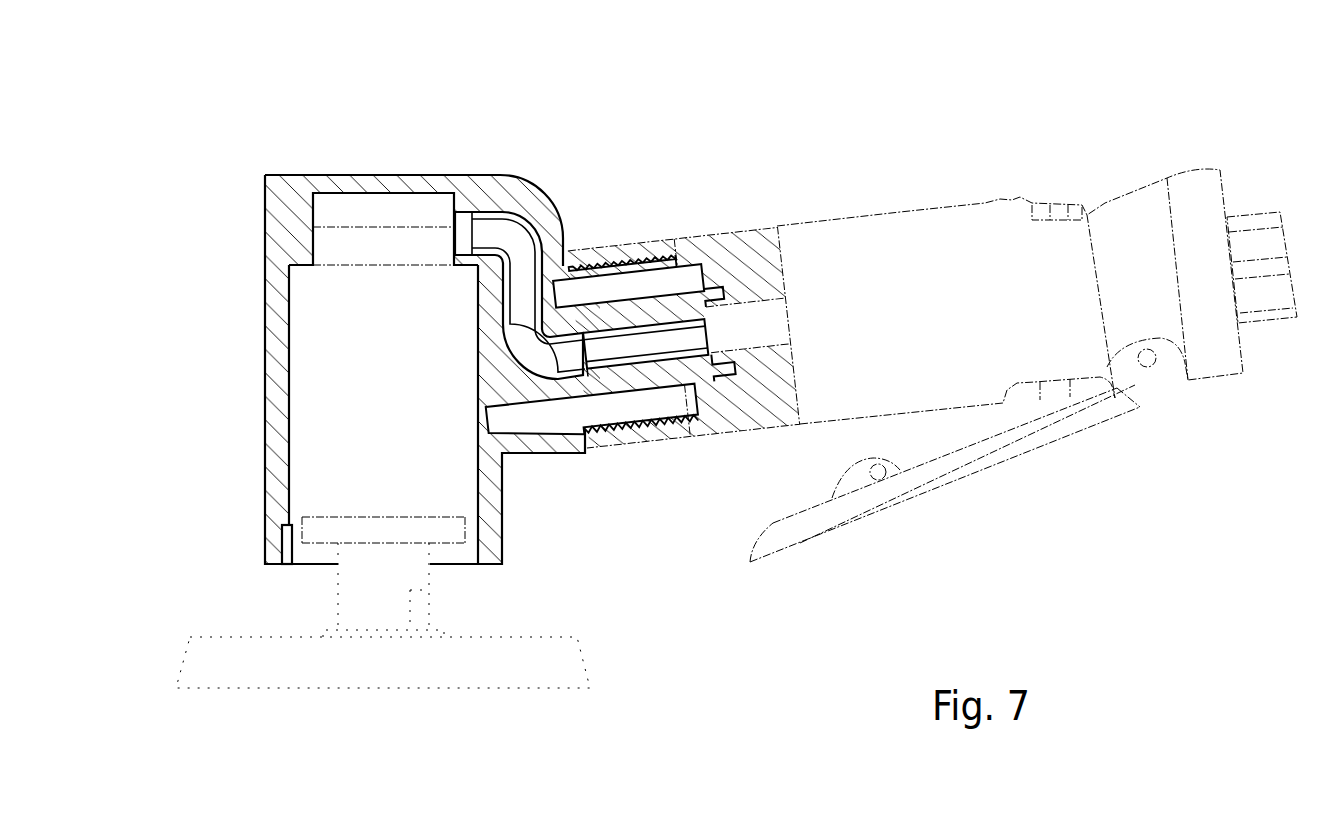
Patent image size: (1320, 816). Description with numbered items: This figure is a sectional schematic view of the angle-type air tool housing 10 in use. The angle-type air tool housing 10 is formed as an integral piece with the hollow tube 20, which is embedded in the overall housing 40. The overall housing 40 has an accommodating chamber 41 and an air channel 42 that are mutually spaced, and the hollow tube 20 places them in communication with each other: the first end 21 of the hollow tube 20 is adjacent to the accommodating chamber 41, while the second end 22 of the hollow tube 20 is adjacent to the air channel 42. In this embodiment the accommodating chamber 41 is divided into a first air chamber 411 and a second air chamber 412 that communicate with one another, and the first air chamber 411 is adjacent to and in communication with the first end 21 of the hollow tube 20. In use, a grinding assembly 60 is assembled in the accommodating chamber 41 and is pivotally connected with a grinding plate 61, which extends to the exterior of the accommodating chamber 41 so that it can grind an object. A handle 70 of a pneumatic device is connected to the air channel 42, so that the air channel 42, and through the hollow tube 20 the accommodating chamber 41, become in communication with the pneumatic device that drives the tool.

The angle-type air tool housing 10 is at (736, 379).
The hollow tube 20 is at (606, 258).
The first end 21 is at (461, 212).
The second end 22 is at (718, 322).
The overall housing 40 is at (495, 341).
The accommodating chamber 41 is at (468, 552).
The air channel 42 is at (727, 420).
The first air chamber 411 is at (352, 190).
The second air chamber 412 is at (290, 433).
The grinding assembly 60 is at (298, 502).
The grinding plate 61 is at (583, 662).
The handle 70 is at (917, 212).